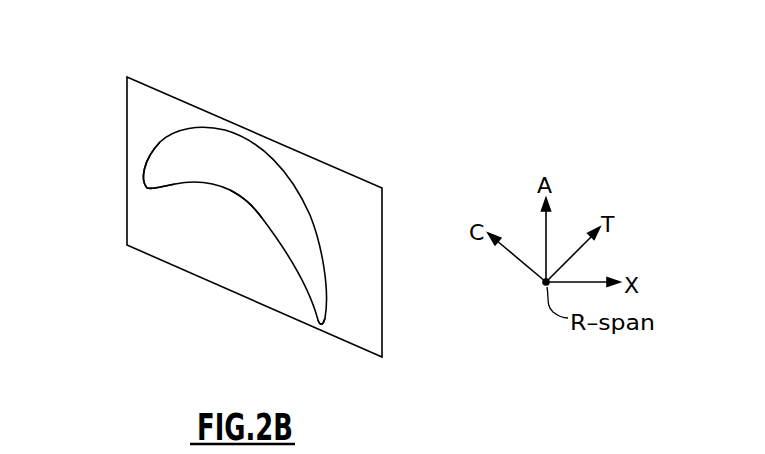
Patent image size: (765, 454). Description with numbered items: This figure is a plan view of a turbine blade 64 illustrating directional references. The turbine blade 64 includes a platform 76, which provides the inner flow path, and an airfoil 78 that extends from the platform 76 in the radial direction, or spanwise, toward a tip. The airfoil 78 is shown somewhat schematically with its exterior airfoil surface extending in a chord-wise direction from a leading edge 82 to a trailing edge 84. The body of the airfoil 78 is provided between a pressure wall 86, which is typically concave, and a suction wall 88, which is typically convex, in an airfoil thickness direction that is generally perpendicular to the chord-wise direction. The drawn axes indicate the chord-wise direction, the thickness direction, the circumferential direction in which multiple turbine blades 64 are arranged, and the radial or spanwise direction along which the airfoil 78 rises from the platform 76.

The turbine blade 64 is at (347, 122).
The platform 76 is at (183, 95).
The airfoil 78 is at (156, 192).
The leading edge 82 is at (148, 186).
The trailing edge 84 is at (321, 328).
The pressure wall 86 is at (247, 201).
The suction wall 88 is at (257, 141).